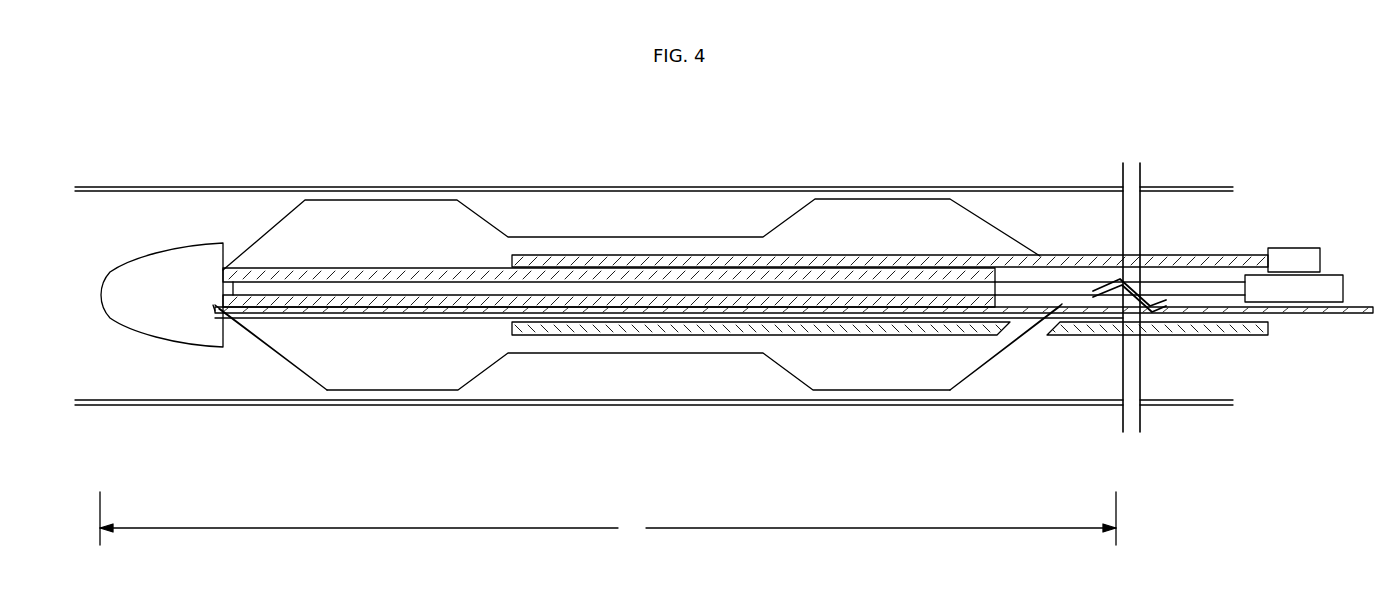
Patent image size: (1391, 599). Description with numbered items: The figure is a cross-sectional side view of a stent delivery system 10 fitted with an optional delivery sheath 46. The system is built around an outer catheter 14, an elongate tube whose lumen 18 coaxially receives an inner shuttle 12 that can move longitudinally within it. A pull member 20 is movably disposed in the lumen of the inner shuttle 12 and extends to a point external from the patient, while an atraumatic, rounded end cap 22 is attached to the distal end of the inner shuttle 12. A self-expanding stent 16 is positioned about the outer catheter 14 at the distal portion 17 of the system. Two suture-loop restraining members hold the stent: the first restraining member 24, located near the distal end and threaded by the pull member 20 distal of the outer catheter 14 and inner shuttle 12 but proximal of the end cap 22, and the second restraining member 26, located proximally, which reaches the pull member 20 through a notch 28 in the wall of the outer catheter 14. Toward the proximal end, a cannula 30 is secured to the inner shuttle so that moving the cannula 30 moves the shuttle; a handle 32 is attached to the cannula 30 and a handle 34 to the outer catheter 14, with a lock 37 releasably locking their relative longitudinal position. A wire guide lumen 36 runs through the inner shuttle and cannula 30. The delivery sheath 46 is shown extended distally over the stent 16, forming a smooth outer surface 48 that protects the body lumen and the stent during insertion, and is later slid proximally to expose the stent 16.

The stent delivery system 10 is at (977, 115).
The inner shuttle 12 is at (893, 320).
The outer catheter 14 is at (556, 255).
The stent 16 is at (342, 200).
The distal portion 17 is at (608, 518).
The lumen 18 is at (1070, 273).
The pull member 20 is at (1188, 323).
The end cap 22 is at (142, 258).
The first restraining member 24 is at (268, 350).
The second restraining member 26 is at (1005, 350).
The notch 28 is at (1038, 330).
The cannula 30 is at (1200, 282).
The handle 32 is at (1333, 275).
The handle 34 is at (1310, 248).
The wire guide lumen 36 is at (272, 288).
The lock 37 is at (1296, 247).
The delivery sheath 46 is at (685, 187).
The smooth outer surface 48 is at (745, 405).